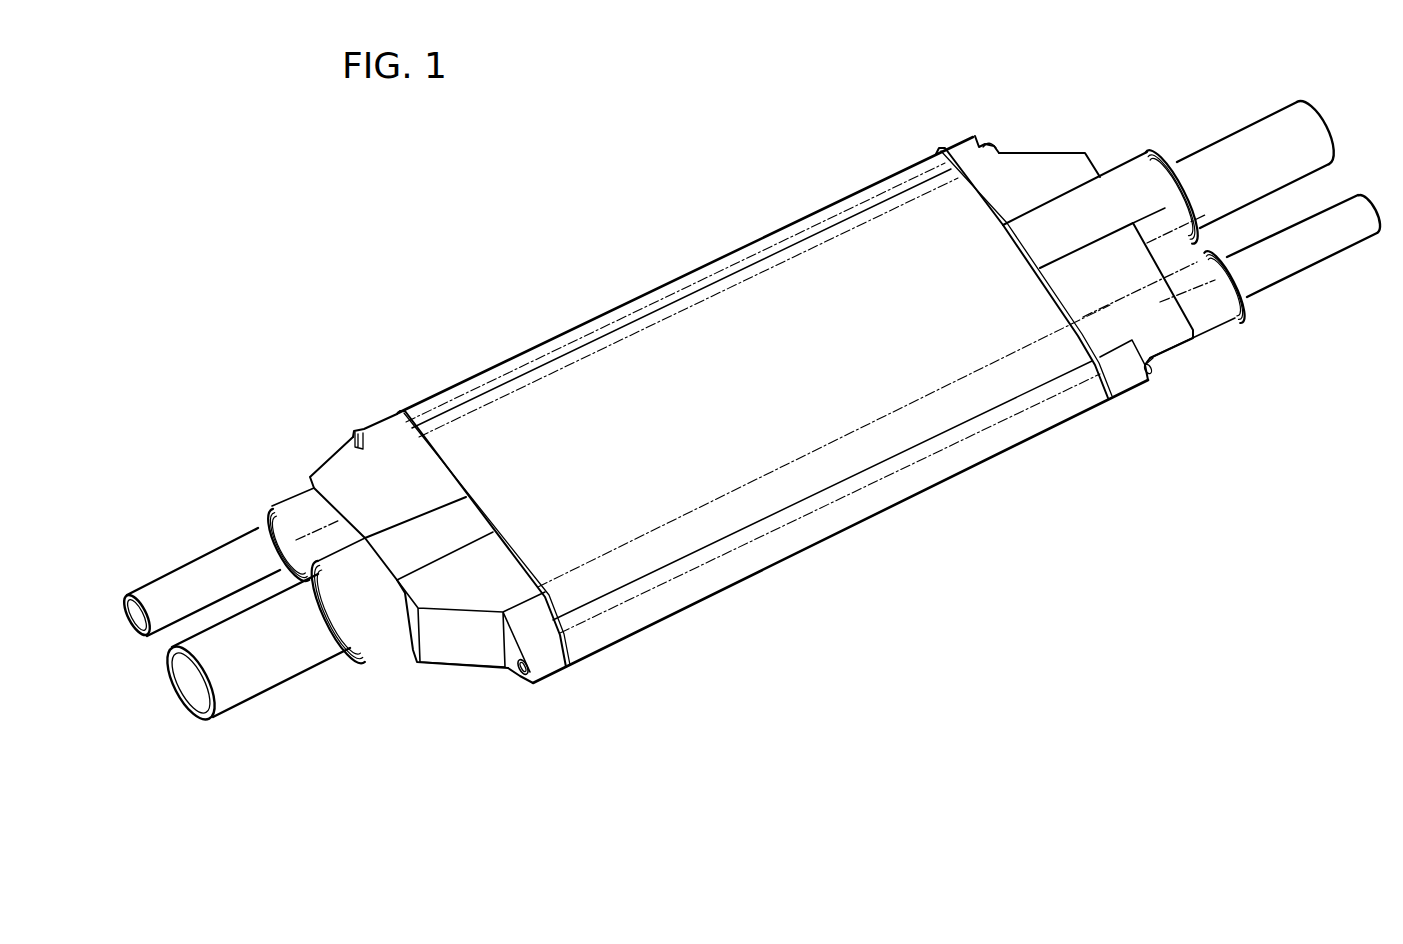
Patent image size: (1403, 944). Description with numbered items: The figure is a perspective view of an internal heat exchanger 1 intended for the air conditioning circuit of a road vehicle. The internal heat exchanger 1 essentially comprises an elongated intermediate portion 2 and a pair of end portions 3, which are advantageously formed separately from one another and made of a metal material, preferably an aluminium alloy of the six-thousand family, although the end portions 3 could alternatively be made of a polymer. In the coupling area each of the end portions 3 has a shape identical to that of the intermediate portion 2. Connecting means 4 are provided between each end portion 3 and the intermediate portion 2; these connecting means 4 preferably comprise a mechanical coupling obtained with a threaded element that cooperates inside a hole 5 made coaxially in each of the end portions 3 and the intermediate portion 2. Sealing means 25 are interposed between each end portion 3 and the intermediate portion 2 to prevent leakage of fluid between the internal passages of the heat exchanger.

The internal heat exchanger 1 is at (678, 186).
The intermediate portion 2 is at (568, 326).
The end portions 3 is at (326, 449).
The connecting means 4 is at (347, 422).
The hole 5 is at (352, 432).
The sealing means 25 is at (580, 678).